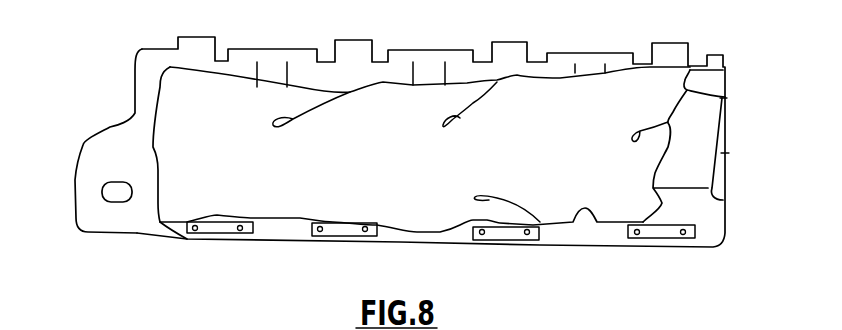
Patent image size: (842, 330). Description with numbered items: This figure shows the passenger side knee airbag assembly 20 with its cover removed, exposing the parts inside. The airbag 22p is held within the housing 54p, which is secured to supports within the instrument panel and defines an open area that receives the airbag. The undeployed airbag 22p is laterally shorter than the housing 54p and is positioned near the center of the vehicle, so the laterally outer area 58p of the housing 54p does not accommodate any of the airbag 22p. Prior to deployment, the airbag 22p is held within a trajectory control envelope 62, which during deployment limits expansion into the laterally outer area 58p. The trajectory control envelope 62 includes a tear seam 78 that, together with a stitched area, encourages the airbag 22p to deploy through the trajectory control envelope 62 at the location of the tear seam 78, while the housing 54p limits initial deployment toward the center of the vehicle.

The knee airbag assembly 20 is at (715, 127).
The airbag 22p is at (160, 203).
The housing 54p is at (110, 152).
The laterally outer area 58p is at (688, 167).
The trajectory control envelope 62 is at (242, 193).
The tear seam 78 is at (593, 217).